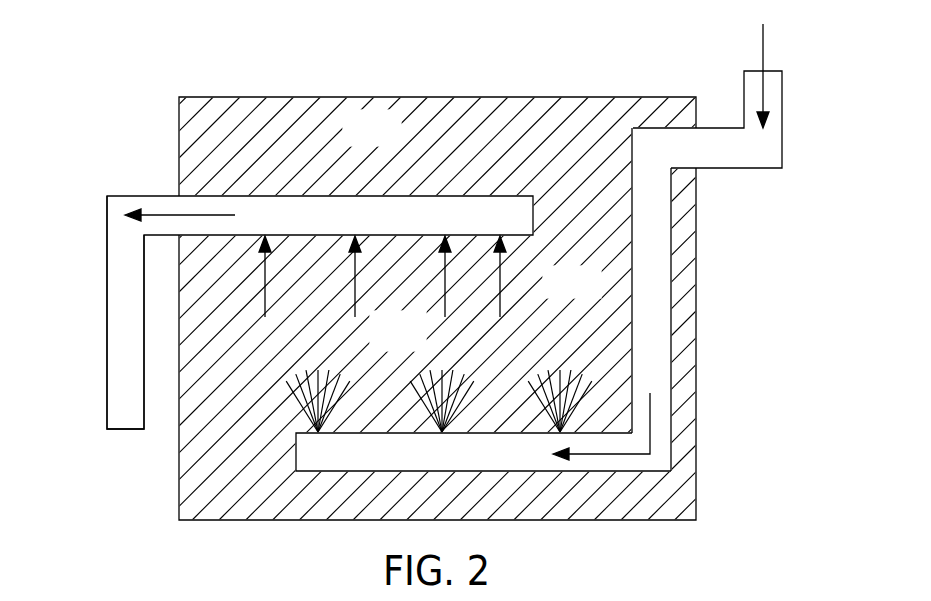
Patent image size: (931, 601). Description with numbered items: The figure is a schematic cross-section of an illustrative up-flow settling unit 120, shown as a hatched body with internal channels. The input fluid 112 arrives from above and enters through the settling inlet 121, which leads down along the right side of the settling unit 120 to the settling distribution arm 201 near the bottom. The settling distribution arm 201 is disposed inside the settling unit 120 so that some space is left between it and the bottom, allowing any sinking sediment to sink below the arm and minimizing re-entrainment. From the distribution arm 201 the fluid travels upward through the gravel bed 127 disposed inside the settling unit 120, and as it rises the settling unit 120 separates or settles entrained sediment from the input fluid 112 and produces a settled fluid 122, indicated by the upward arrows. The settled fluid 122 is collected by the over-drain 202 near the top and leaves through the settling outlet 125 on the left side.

The settling unit 120 is at (272, 97).
The over-drain 202 is at (370, 196).
The settling outlet 125 is at (107, 314).
The settled fluid 122 is at (153, 215).
The settling distribution arm 201 is at (296, 450).
The settling inlet 121 is at (785, 119).
The input fluid 112 is at (764, 47).
The gravel bed 127 is at (416, 345).